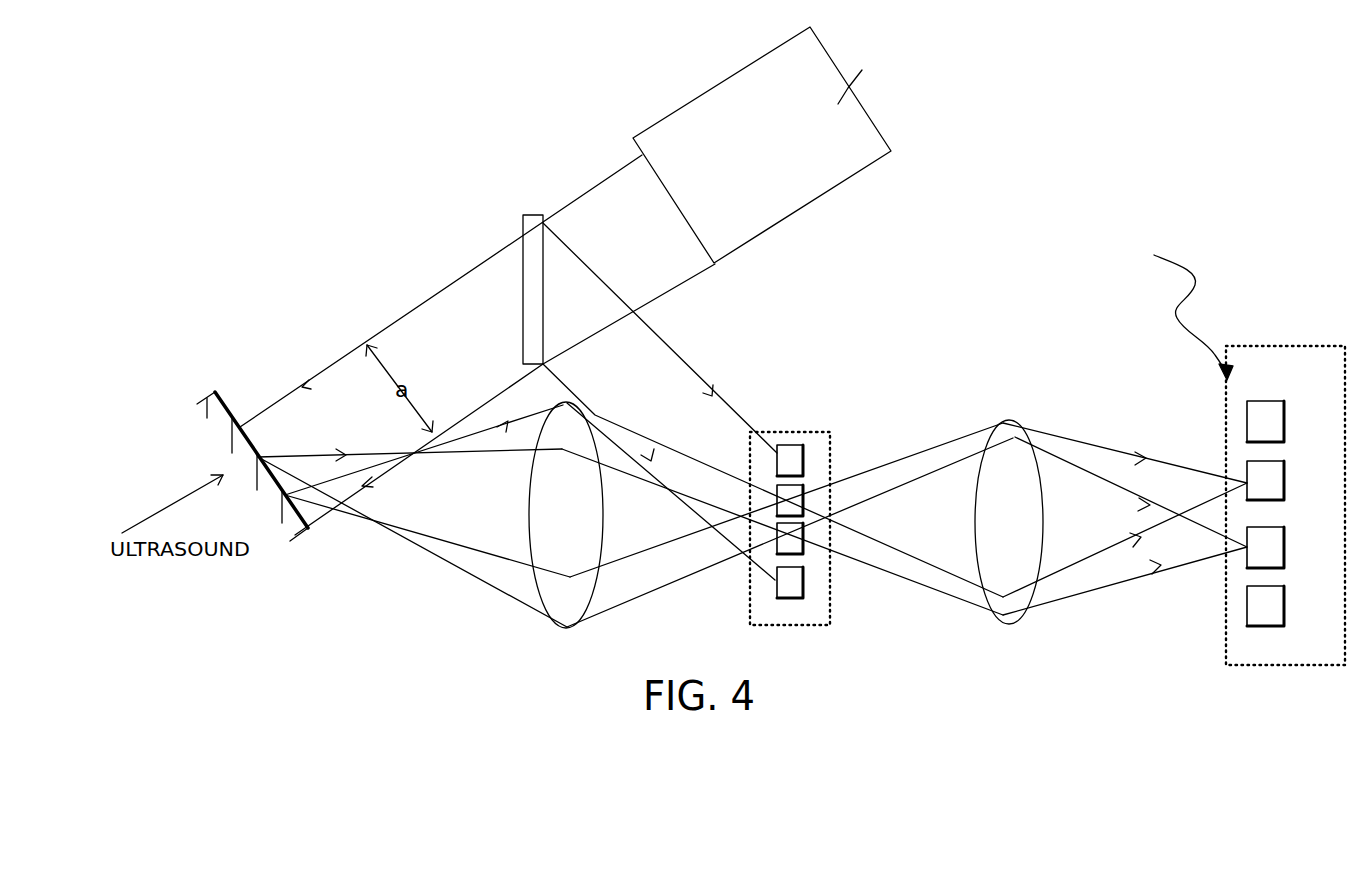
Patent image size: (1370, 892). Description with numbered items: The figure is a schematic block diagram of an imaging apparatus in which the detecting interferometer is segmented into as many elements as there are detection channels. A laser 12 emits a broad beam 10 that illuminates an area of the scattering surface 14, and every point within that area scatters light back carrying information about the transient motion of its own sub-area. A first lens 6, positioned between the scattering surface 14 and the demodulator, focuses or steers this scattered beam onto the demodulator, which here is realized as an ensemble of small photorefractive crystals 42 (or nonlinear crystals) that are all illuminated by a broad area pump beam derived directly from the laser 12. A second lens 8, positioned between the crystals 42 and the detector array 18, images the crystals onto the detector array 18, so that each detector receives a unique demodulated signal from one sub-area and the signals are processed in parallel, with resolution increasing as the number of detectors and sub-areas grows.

The laser 12 is at (636, 136).
The broad beam 10 is at (326, 392).
The scattering surface 14 is at (233, 404).
The first lens 6 is at (566, 404).
The photorefractive crystals 42 is at (824, 433).
The second lens 8 is at (1011, 420).
The detector array 18 is at (1227, 473).